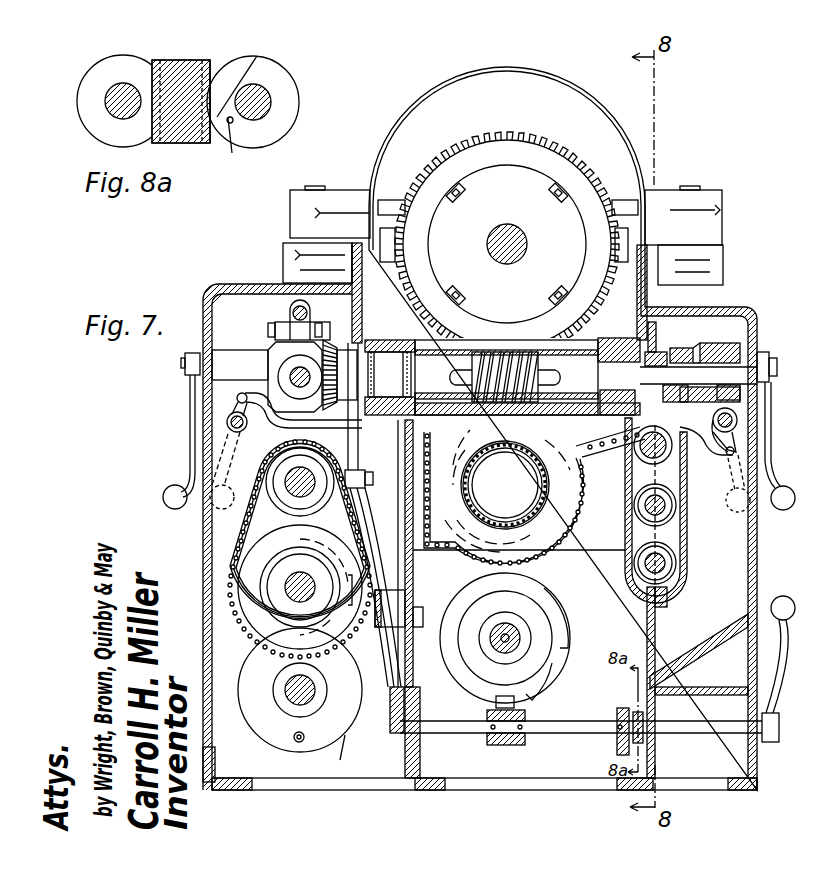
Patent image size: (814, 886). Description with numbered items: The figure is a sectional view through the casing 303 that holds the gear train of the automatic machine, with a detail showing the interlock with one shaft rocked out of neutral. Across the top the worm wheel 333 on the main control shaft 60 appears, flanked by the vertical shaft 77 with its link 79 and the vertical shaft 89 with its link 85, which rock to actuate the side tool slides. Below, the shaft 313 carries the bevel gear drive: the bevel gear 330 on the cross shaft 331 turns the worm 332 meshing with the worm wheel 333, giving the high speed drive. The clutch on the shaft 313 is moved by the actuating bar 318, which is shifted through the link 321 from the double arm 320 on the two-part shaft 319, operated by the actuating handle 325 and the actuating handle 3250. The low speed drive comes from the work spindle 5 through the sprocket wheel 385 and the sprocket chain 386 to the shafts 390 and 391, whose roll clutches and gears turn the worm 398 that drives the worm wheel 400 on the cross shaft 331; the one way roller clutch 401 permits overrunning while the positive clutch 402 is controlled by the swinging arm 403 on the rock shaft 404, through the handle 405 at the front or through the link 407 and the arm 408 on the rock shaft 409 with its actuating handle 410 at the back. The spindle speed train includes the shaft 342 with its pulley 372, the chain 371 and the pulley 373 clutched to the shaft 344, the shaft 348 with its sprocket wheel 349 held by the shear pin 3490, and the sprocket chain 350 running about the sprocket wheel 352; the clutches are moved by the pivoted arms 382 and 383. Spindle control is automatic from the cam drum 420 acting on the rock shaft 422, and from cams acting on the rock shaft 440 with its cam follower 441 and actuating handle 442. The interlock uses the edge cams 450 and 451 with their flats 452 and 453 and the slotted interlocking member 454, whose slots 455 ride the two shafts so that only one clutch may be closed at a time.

In FIG. 8A, the edge cam 450 is at (98, 66).
In FIG. 7, the edge cam 450 is at (797, 743).
In FIG. 8A, the rock shaft 422 is at (113, 112).
In FIG. 8A, the flat 452 is at (168, 50).
In FIG. 8A, the slotted interlocking member 454 is at (211, 62).
In FIG. 7, the slotted interlocking member 454 is at (660, 744).
In FIG. 8A, the edge cam 451 is at (283, 85).
In FIG. 8A, the rock shaft 440 is at (262, 108).
In FIG. 7, the rock shaft 440 is at (584, 734).
In FIG. 8A, the flat 453 is at (233, 145).
In FIG. 7, the casing 303 is at (226, 284).
In FIG. 7, the vertical shaft 77 is at (322, 190).
In FIG. 7, the link 79 is at (391, 205).
In FIG. 7, the main control shaft 60 is at (507, 234).
In FIG. 7, the link 85 is at (620, 207).
In FIG. 7, the vertical shaft 89 is at (690, 190).
In FIG. 7, the link 321 is at (290, 328).
In FIG. 7, the actuating bar 318 is at (307, 313).
In FIG. 7, the double arm 320 is at (262, 350).
In FIG. 7, the cross shaft 331 is at (394, 368).
In FIG. 7, the worm 332 is at (508, 350).
In FIG. 7, the worm wheel 333 is at (580, 331).
In FIG. 7, the worm wheel 400 is at (660, 342).
In FIG. 7, the one way roller clutch 401 is at (688, 352).
In FIG. 7, the positive clutch 402 is at (752, 345).
In FIG. 7, the two-part shaft 319 is at (181, 364).
In FIG. 7, the shaft 313 is at (292, 379).
In FIG. 7, the bevel gear 330 is at (326, 406).
In FIG. 7, the arm 408 is at (238, 395).
In FIG. 7, the swinging arm 403 is at (732, 407).
In FIG. 7, the rock shaft 404 is at (738, 420).
In FIG. 7, the actuating handle 325 is at (190, 410).
In FIG. 7, the rock shaft 409 is at (227, 425).
In FIG. 7, the link 407 is at (360, 426).
In FIG. 7, the worm 398 is at (640, 443).
In FIG. 7, the actuating handle 410 is at (212, 462).
In FIG. 7, the shaft 342 is at (328, 475).
In FIG. 7, the actuating handle 3250 is at (772, 478).
In FIG. 7, the sprocket chain 386 is at (606, 458).
In FIG. 7, the chain 371 is at (268, 486).
In FIG. 7, the shaft 390 is at (677, 505).
In FIG. 7, the pulley 372 is at (252, 508).
In FIG. 7, the pivoted arm 382 is at (377, 545).
In FIG. 7, the sprocket wheel 385 is at (555, 517).
In FIG. 7, the handle 405 is at (735, 490).
In FIG. 7, the shaft 344 is at (290, 583).
In FIG. 7, the sprocket chain 350 is at (475, 548).
In FIG. 7, the sprocket wheel 352 is at (510, 530).
In FIG. 7, the work spindle 5 is at (545, 540).
In FIG. 7, the shaft 391 is at (677, 568).
In FIG. 7, the pulley 373 is at (258, 636).
In FIG. 7, the actuating handle 442 is at (746, 648).
In FIG. 7, the cam drum 420 is at (790, 660).
In FIG. 7, the shaft 348 is at (290, 700).
In FIG. 7, the pivoted arm 383 is at (404, 698).
In FIG. 7, the cam follower 441 is at (515, 700).
In FIG. 7, the shear pin 3490 is at (297, 742).
In FIG. 7, the sprocket wheel 349 is at (328, 748).
In FIG. 7, the slot 455 is at (779, 720).